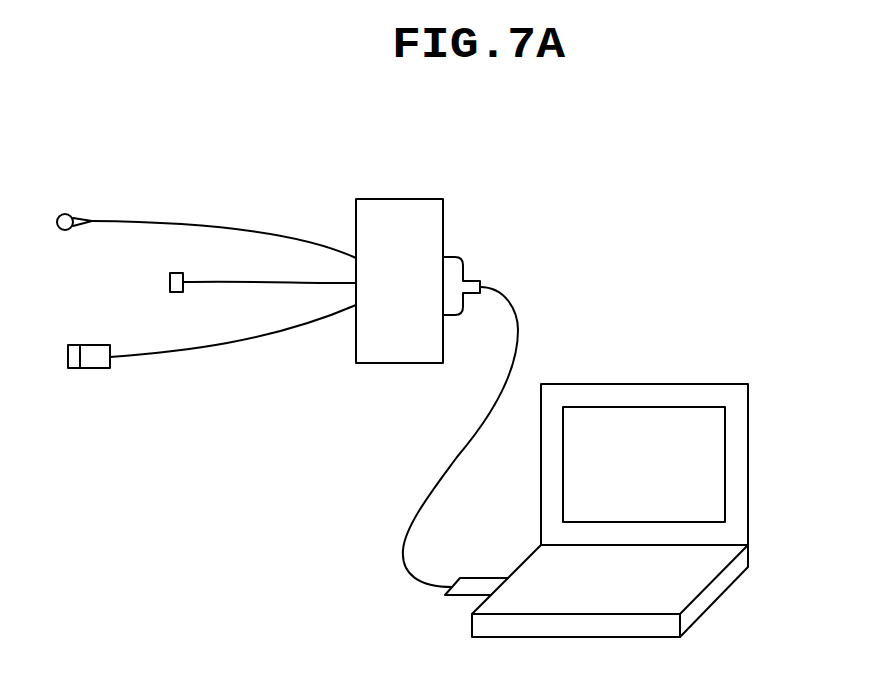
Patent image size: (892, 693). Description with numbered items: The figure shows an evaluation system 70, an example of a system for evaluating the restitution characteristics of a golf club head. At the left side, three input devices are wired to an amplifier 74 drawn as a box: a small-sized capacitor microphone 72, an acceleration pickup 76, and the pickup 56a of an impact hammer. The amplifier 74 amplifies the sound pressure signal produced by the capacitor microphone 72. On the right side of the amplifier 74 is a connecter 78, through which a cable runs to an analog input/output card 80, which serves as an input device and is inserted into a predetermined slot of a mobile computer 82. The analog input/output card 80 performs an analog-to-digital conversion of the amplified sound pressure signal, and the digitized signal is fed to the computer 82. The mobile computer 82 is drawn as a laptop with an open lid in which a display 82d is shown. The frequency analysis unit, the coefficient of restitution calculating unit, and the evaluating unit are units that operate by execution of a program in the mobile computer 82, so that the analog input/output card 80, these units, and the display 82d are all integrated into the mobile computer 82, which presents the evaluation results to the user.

The evaluation system 70 is at (533, 181).
The amplifier 74 is at (413, 197).
The acceleration pickup 76 is at (76, 213).
The pickup of the impact hammer 56a is at (182, 271).
The small-sized capacitor microphone 72 is at (93, 373).
The connecter 78 is at (466, 267).
The analog input/output card 80 is at (453, 602).
The mobile computer 82 is at (643, 468).
The display 82d is at (710, 462).